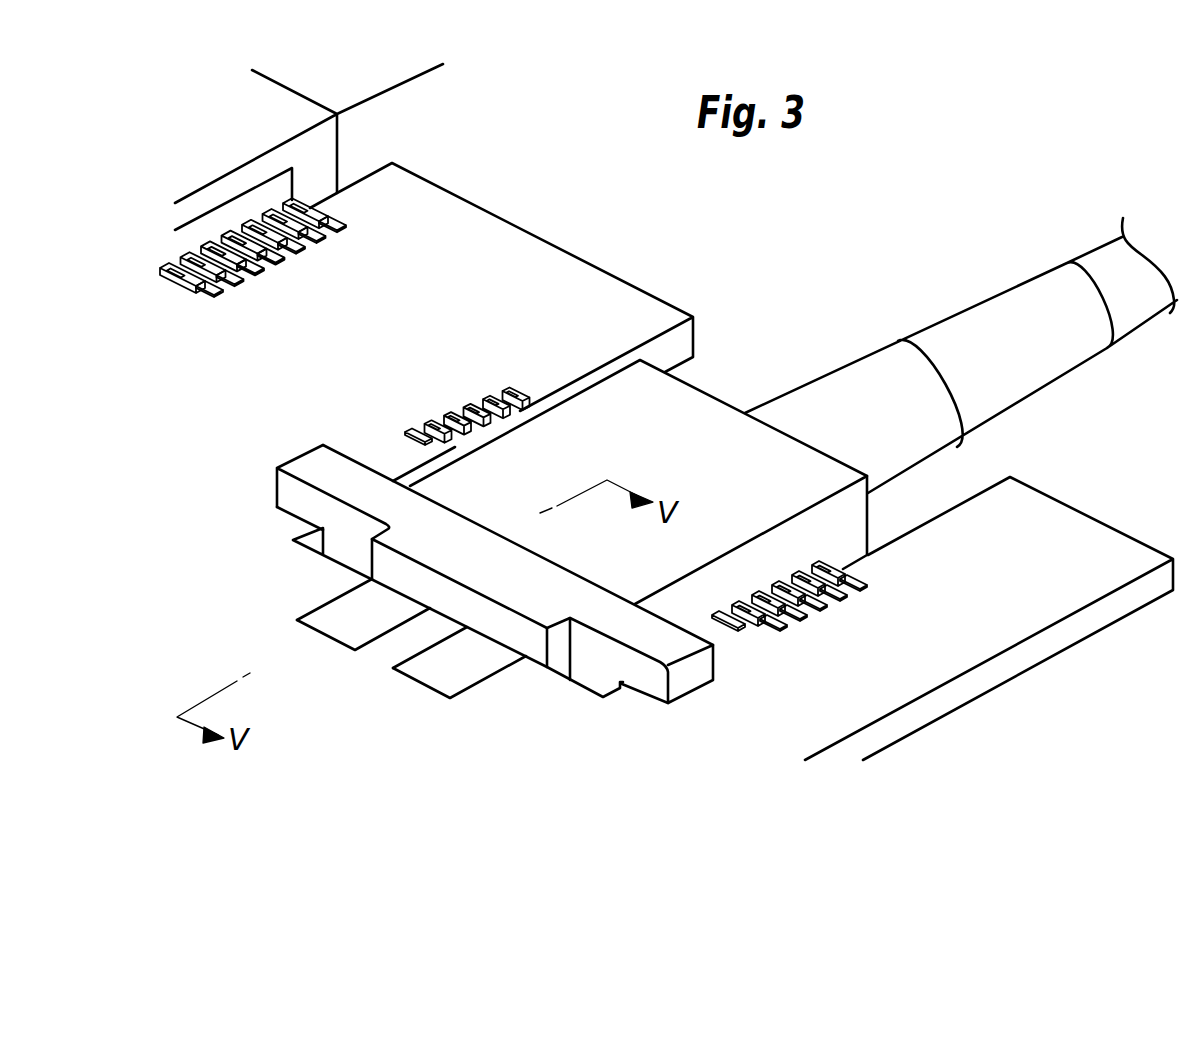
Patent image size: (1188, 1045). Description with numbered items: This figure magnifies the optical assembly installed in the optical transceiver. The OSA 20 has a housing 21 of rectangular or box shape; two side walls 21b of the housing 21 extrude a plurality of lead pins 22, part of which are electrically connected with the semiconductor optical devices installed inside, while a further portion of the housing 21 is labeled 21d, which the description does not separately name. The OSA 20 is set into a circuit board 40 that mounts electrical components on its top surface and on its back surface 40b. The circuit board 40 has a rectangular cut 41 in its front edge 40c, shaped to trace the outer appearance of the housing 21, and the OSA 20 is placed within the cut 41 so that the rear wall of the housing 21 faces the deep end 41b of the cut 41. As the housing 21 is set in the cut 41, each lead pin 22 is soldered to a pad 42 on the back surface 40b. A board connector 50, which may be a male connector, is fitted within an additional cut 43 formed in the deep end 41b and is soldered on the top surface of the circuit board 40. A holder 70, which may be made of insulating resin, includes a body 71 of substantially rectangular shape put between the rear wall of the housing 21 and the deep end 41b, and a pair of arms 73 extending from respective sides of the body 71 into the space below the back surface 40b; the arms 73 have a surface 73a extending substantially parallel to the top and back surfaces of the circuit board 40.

The OSA 20 is at (793, 411).
The housing 21 is at (687, 457).
The side walls 21b is at (853, 523).
The top surface of package 21d is at (705, 438).
The lead pins 22 is at (235, 283).
The circuit board 40 is at (674, 424).
The back surface 40b is at (953, 658).
The front edge 40c is at (577, 255).
The rectangular cut 41 is at (338, 192).
The deep end 41b is at (592, 680).
The pad 42 is at (338, 228).
The additional cut 43 is at (342, 595).
The board connectors 50 is at (337, 625).
The holder 70 is at (460, 620).
The body 71 is at (492, 570).
The arms 73 is at (333, 483).
The surface 73a is at (290, 520).